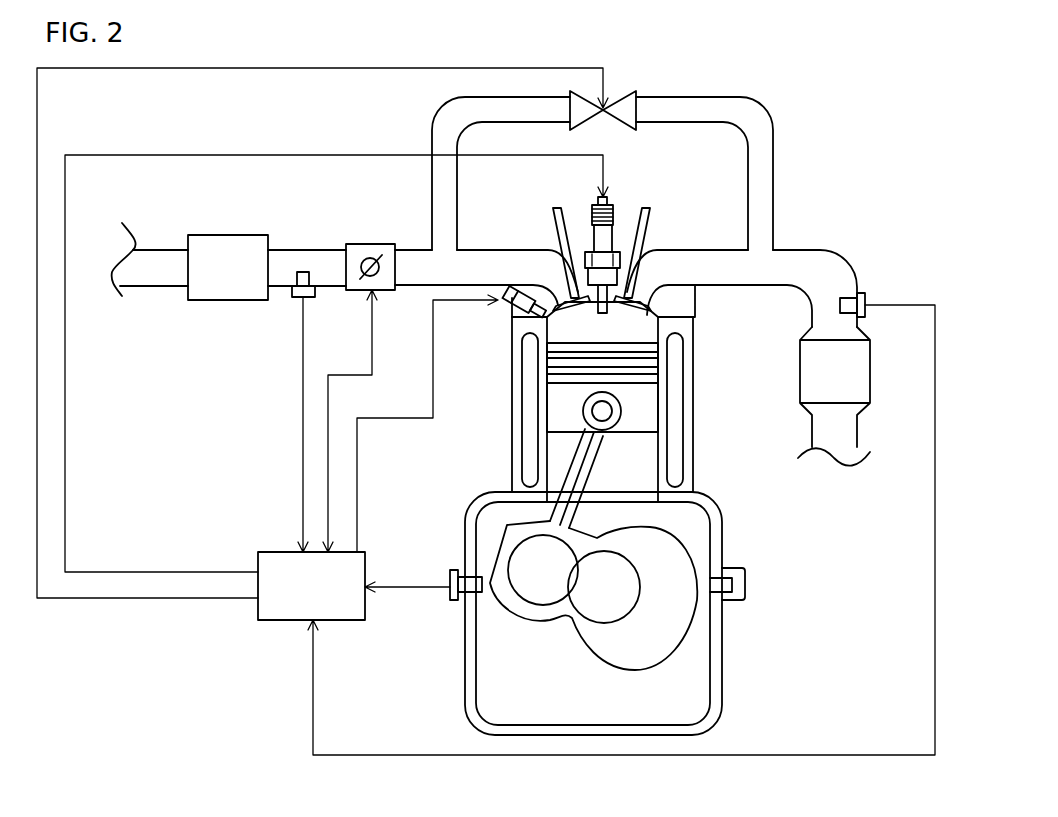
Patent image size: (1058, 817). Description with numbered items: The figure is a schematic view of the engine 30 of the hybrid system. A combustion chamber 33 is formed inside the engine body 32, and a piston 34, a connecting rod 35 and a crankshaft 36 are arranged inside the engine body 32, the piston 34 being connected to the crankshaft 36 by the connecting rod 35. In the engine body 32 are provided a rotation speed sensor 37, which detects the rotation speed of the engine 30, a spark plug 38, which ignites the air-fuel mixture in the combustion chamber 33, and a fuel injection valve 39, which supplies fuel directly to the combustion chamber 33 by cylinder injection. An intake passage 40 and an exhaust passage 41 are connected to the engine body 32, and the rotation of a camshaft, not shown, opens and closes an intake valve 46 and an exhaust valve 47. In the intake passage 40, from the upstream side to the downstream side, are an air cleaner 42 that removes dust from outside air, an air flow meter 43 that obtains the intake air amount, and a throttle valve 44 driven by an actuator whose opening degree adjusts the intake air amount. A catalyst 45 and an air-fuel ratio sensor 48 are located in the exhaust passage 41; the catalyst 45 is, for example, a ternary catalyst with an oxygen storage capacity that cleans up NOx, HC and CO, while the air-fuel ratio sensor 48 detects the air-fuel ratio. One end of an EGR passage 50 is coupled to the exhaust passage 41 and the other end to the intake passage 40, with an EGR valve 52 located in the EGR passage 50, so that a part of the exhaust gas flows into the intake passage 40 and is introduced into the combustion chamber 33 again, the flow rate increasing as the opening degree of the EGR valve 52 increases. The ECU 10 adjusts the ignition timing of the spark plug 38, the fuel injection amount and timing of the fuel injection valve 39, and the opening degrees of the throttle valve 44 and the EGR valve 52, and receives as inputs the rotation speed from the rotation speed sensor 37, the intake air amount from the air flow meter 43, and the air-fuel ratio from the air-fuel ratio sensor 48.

The ECU 10 is at (266, 623).
The engine 30 is at (937, 97).
The engine body 32 is at (775, 569).
The combustion chamber 33 is at (630, 330).
The piston 34 is at (568, 413).
The connecting rod 35 is at (575, 472).
The crankshaft 36 is at (533, 543).
The rotation speed sensor 37 is at (452, 600).
The spark plug 38 is at (612, 202).
The fuel injection valve 39 is at (500, 318).
The intake passage 40 is at (155, 288).
The exhaust passage 41 is at (818, 250).
The air cleaner 42 is at (222, 302).
The air flow meter 43 is at (297, 298).
The throttle valve 44 is at (362, 243).
The catalyst 45 is at (870, 378).
The intake valve 46 is at (556, 207).
The exhaust valve 47 is at (655, 212).
The air-fuel ratio sensor 48 is at (860, 295).
The EGR passage 50 is at (775, 118).
The EGR valve 52 is at (603, 110).